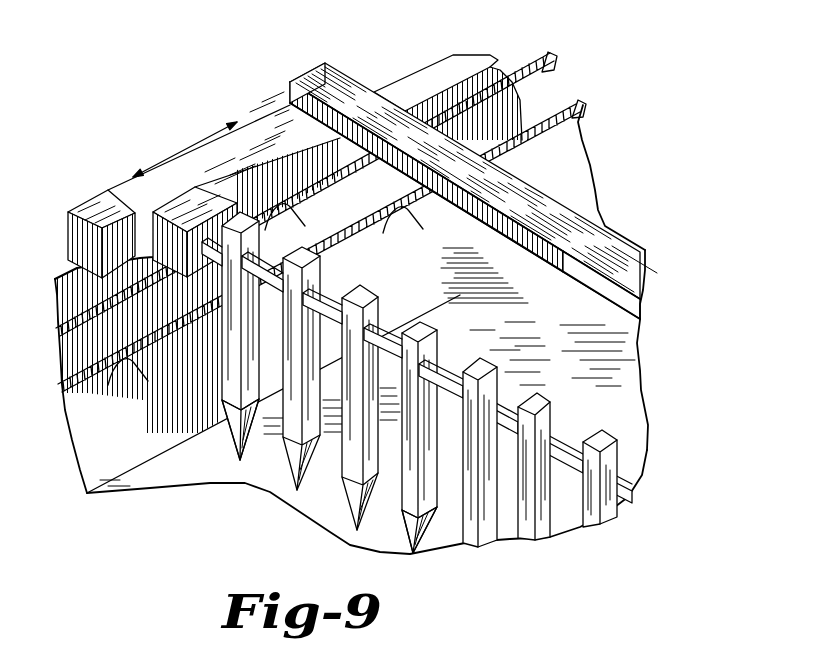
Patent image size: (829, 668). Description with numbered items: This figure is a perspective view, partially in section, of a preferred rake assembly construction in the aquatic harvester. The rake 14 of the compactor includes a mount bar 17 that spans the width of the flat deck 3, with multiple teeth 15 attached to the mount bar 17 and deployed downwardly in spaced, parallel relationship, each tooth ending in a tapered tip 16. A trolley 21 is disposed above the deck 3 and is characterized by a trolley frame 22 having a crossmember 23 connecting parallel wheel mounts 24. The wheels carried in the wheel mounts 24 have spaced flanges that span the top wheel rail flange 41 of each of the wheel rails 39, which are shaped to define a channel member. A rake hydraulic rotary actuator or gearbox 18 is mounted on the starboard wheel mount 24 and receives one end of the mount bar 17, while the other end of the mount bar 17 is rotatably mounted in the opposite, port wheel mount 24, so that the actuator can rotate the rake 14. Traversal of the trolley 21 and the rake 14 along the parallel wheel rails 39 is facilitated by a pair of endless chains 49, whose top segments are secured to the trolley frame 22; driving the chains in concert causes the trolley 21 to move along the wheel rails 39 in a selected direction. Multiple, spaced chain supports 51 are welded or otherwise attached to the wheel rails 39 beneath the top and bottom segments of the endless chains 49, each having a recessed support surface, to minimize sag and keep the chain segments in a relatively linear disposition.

The deck 3 is at (549, 338).
The rake 14 is at (397, 520).
The teeth 15 is at (350, 447).
The tapered tips 16 is at (232, 449).
The mount bar 17 is at (390, 332).
The rake hydraulic rotary actuator or gearbox 18 is at (187, 207).
The trolley 21 is at (256, 100).
The trolley frame 22 is at (307, 72).
The crossmember 23 is at (617, 250).
The wheel mounts 24 is at (102, 210).
The wheel rails 39 is at (585, 150).
The top wheel rail flange 41 is at (428, 84).
The endless chains 49 is at (553, 108).
The chain supports 51 is at (293, 222).